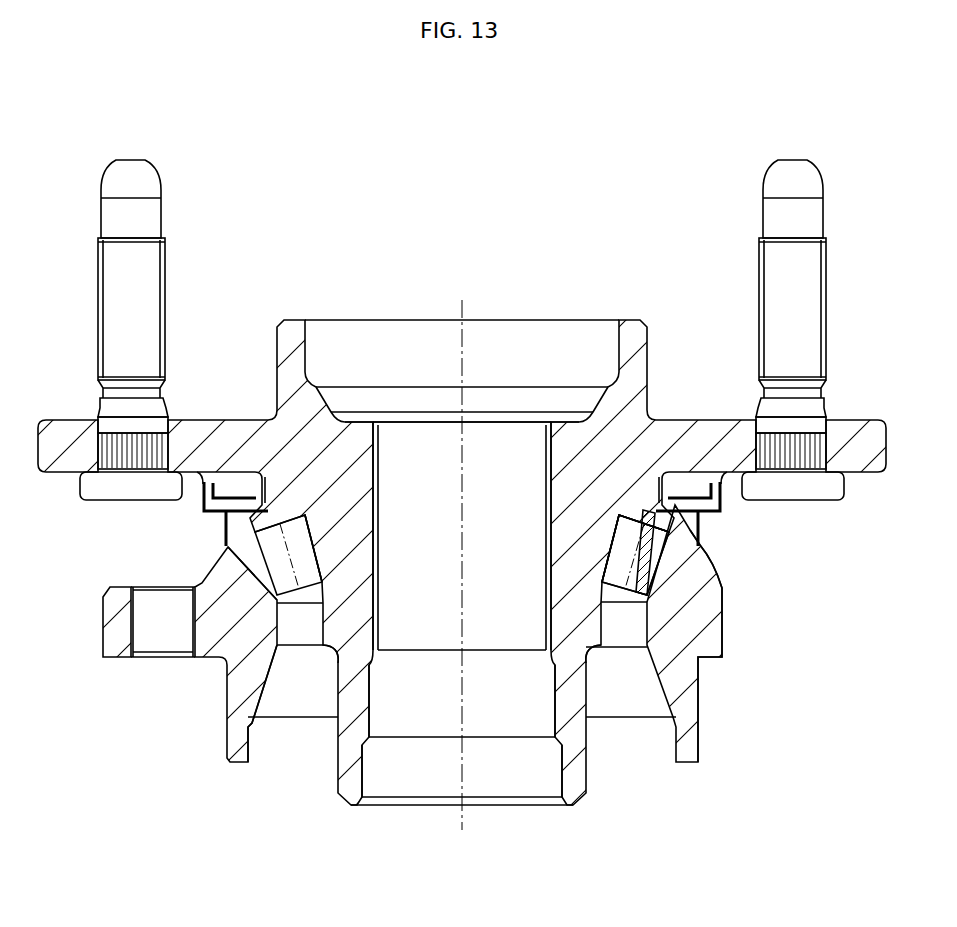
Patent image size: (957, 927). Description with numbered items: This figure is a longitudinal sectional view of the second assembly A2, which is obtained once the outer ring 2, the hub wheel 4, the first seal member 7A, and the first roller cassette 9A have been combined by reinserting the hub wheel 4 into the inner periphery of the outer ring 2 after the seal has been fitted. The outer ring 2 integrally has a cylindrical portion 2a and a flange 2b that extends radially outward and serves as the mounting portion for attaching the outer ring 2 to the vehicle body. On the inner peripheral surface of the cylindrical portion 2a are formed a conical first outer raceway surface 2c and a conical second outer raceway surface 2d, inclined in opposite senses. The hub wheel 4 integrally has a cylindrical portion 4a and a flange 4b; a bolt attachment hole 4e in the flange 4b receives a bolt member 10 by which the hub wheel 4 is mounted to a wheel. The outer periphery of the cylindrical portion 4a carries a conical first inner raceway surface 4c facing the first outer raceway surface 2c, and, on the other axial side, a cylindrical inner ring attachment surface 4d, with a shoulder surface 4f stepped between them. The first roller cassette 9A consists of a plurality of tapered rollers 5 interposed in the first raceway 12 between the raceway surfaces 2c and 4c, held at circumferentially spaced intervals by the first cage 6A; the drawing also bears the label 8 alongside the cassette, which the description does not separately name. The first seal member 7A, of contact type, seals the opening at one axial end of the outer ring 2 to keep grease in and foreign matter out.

The outer ring 2 is at (745, 656).
The cylindrical portion 2a is at (697, 625).
The flange 2b is at (117, 623).
The first outer raceway surface 2c is at (270, 565).
The second outer raceway surface 2d is at (265, 692).
The hub wheel 4 is at (674, 392).
The cylindrical portion 4a is at (548, 609).
The flange 4b is at (862, 437).
The first inner raceway surface 4c is at (308, 540).
The inner ring attachment surface 4d is at (592, 678).
The bolt attachment hole 4e is at (165, 424).
The shoulder surface 4f is at (334, 655).
The tapered rollers 5 is at (268, 549).
The first cage 6A is at (655, 556).
The first seal member 7A is at (727, 517).
The tapered roller 8 is at (655, 556).
The first roller cassette 9A is at (612, 524).
The bolt member 10 is at (118, 305).
The first raceway 12 is at (620, 556).
The second assembly A2 is at (755, 768).